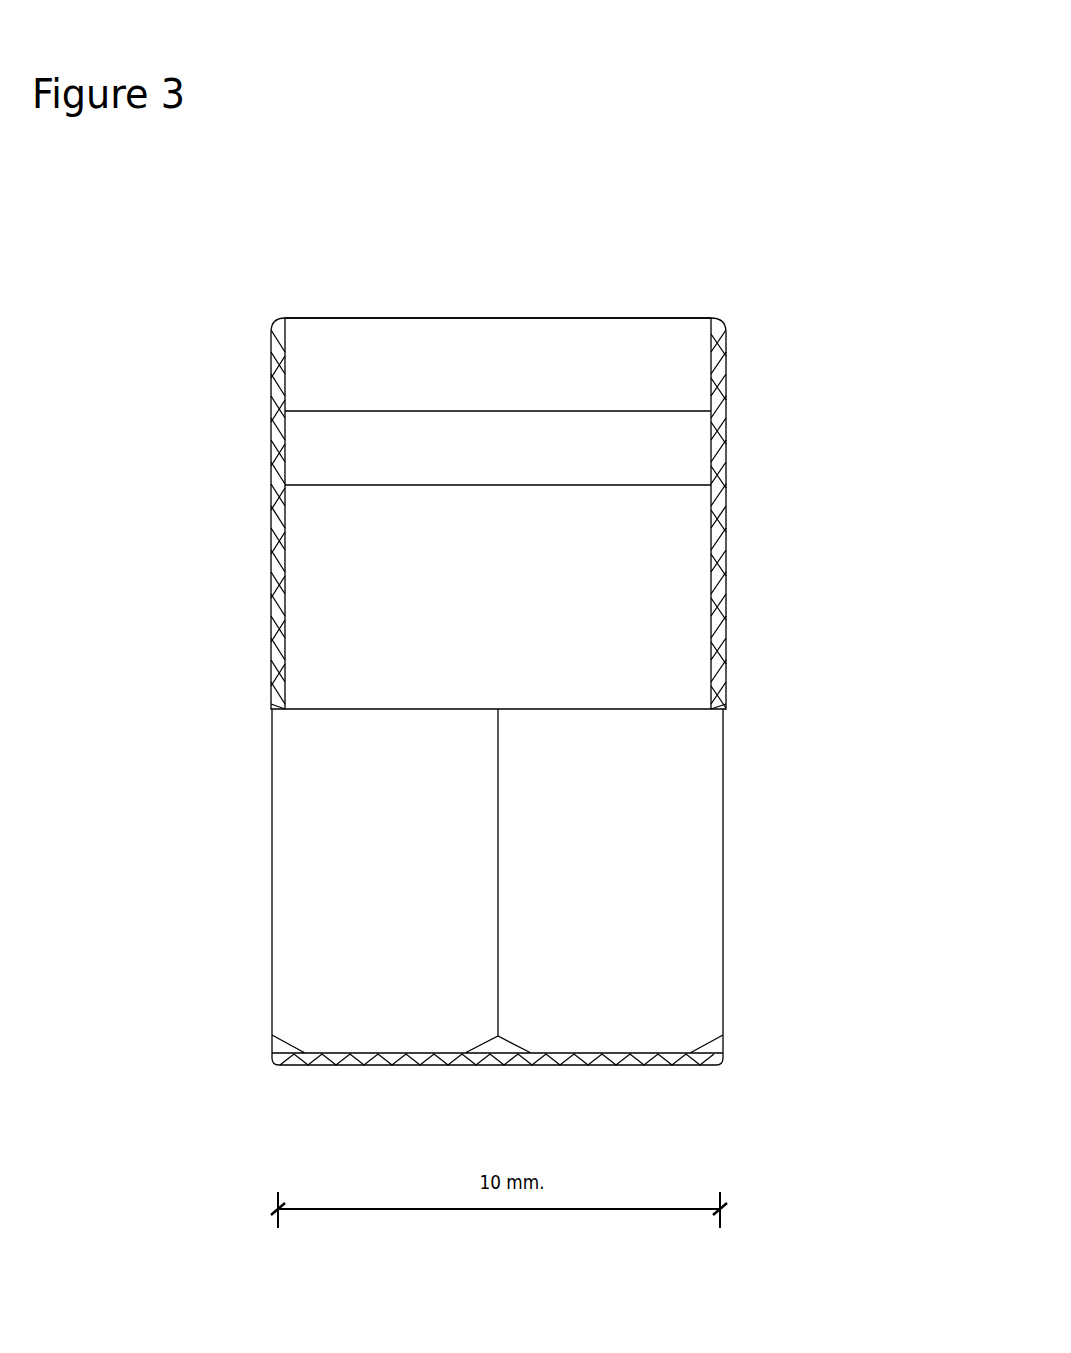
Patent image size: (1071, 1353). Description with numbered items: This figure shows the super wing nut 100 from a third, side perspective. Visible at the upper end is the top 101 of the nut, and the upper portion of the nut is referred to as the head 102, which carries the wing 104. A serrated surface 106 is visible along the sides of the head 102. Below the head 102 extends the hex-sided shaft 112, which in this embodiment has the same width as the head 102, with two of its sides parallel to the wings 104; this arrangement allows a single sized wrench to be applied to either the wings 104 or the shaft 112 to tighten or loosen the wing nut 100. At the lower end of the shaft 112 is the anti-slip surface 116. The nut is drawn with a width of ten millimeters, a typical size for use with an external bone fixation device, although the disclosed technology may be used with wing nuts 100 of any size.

The super wing nut 100 is at (441, 216).
The top 101 is at (422, 317).
The head 102 is at (227, 712).
The wing 104 is at (561, 335).
The serrated surface 106 is at (147, 730).
The hex-sided shaft 112 is at (272, 845).
The anti-slip surface 116 is at (618, 1062).